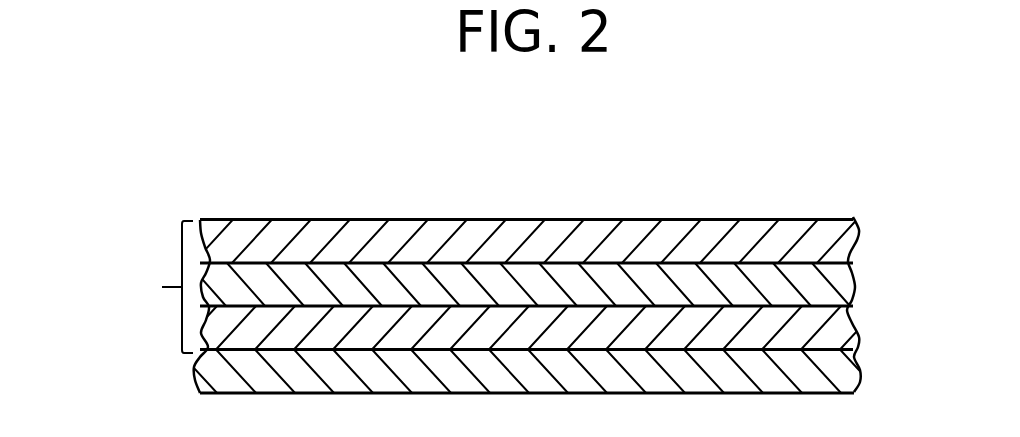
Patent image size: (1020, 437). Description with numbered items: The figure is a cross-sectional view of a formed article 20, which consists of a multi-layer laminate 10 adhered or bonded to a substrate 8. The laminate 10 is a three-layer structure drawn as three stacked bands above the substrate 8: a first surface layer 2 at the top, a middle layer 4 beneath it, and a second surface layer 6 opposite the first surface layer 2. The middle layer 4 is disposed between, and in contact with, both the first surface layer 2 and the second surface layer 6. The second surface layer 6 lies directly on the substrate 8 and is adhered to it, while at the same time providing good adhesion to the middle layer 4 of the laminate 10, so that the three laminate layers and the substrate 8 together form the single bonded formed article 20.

The formed article 20 is at (650, 163).
The multi-layer laminate 10 is at (158, 302).
The first surface layer 2 is at (853, 233).
The middle layer 4 is at (849, 283).
The second surface layer 6 is at (849, 325).
The substrate 8 is at (195, 385).